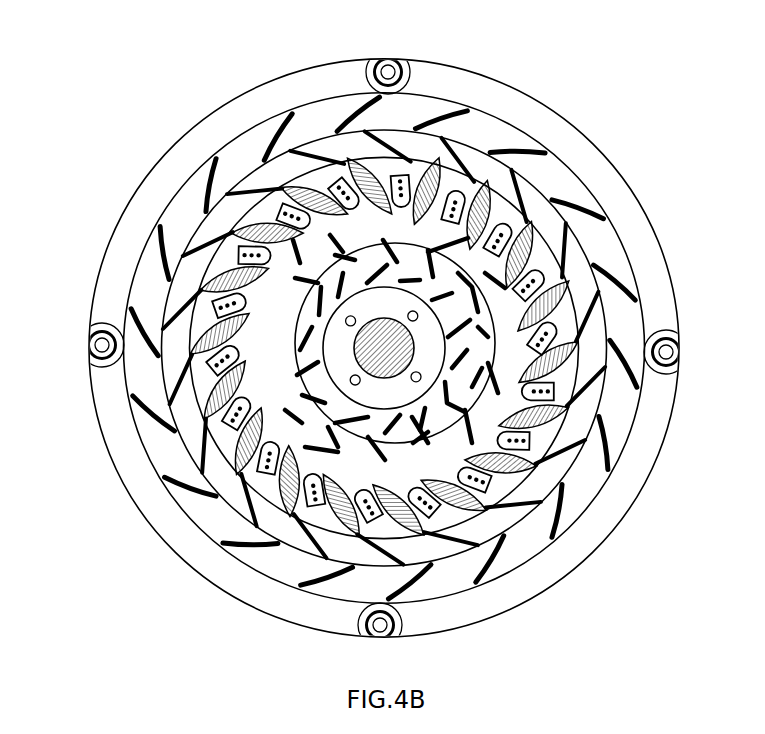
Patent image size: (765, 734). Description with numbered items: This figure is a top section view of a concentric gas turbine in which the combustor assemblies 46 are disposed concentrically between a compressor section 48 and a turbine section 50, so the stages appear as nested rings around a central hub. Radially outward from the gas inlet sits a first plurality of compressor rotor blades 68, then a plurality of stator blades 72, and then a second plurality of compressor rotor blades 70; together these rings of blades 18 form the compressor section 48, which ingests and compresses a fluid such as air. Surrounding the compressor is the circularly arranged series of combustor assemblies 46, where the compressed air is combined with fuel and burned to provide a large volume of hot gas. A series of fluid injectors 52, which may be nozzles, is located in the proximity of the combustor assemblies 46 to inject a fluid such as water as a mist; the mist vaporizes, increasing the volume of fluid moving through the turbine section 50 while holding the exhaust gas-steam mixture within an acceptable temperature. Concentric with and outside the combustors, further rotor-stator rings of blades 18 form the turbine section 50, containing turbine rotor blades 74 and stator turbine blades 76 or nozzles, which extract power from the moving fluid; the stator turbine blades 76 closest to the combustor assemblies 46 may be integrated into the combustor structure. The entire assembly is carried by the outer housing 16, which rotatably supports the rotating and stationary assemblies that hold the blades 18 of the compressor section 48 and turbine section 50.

The housing 16 is at (295, 92).
The rotor-stator rings of blades 18 is at (300, 460).
The combustor assembly 46 is at (216, 436).
The compressor section 48 is at (293, 245).
The turbine section 50 is at (258, 581).
The fluid injectors 52 is at (215, 322).
The first plurality of compressor rotor blades 68 is at (449, 284).
The second plurality of compressor rotor blades 70 is at (506, 287).
The stator blades 72 is at (476, 287).
The turbine rotor blades 74 is at (628, 412).
The stator turbine blades 76 is at (584, 444).